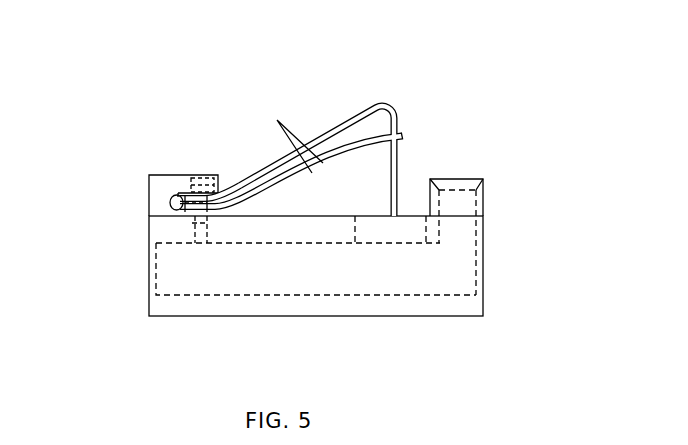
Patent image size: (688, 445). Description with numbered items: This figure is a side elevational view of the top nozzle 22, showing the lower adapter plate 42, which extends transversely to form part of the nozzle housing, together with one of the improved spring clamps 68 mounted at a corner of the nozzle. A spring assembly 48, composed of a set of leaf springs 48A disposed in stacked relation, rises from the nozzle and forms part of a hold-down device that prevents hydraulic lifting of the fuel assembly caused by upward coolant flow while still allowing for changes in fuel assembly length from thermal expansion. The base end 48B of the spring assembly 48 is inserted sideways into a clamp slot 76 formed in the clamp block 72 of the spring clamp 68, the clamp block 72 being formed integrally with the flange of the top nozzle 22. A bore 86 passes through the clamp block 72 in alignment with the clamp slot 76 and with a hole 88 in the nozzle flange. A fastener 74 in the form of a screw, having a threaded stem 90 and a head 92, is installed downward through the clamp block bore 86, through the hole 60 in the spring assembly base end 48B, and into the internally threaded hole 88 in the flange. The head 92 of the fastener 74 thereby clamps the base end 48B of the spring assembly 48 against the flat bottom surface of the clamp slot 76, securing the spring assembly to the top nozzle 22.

The top nozzle 22 is at (492, 144).
The lower adapter plate 42 is at (303, 317).
The spring assembly 48 is at (410, 98).
The leaf springs 48A is at (312, 173).
The base end of spring assembly 48B is at (217, 216).
The hole in spring assembly base end 60 is at (188, 221).
The spring clamp 68 is at (150, 169).
The clamp block 72 is at (170, 182).
The fastener 74 is at (210, 232).
The clamp slot 76 is at (170, 209).
The bore 86 is at (203, 176).
The hole in flange 88 is at (203, 216).
The threaded stem 90 is at (207, 216).
The head 92 is at (193, 176).